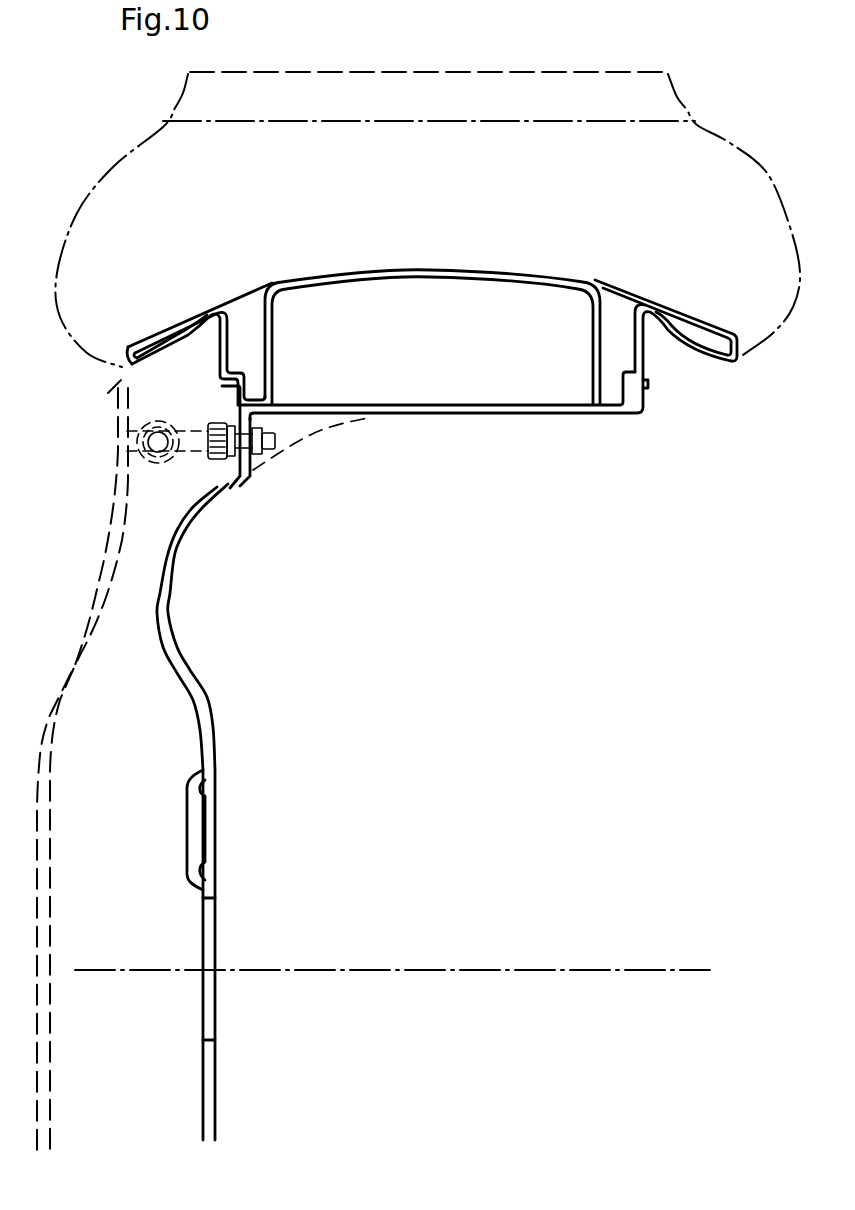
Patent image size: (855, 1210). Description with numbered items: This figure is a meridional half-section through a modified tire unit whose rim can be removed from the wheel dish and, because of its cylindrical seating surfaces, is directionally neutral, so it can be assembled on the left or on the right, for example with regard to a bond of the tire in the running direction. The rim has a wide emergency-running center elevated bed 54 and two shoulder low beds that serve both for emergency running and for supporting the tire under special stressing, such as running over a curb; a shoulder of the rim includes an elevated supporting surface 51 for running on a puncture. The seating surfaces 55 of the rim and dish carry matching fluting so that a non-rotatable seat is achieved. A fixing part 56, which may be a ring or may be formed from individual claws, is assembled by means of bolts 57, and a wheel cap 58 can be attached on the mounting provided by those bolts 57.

The elevated supporting surface 51 is at (642, 298).
The emergency-running center elevated bed 54 is at (427, 270).
The seating surfaces 55 is at (273, 401).
The fixing part 56 is at (227, 403).
The bolts 57 is at (189, 444).
The wheel cap 58 is at (117, 544).